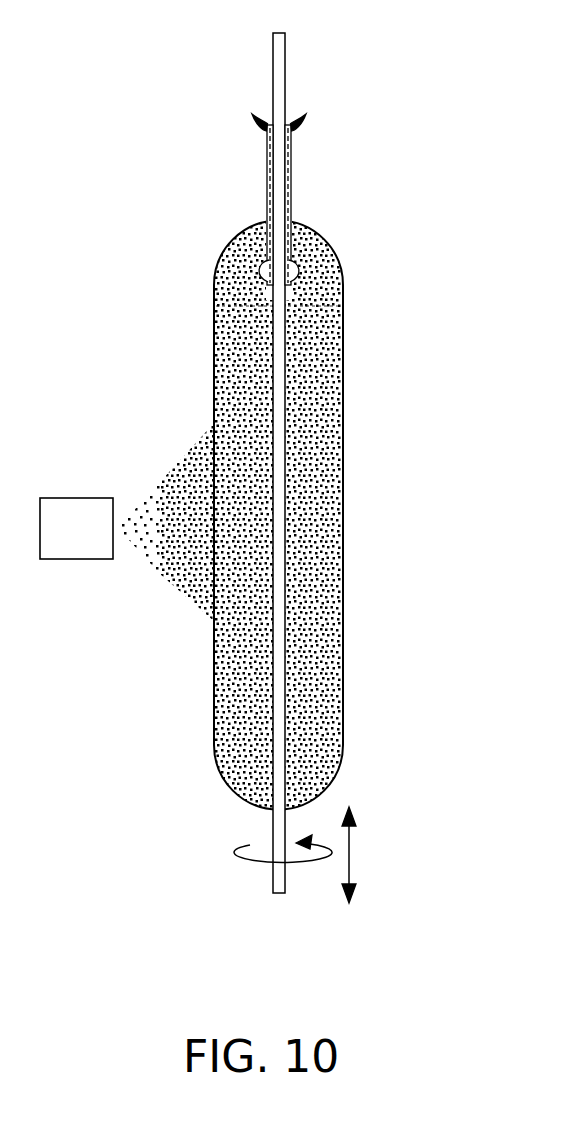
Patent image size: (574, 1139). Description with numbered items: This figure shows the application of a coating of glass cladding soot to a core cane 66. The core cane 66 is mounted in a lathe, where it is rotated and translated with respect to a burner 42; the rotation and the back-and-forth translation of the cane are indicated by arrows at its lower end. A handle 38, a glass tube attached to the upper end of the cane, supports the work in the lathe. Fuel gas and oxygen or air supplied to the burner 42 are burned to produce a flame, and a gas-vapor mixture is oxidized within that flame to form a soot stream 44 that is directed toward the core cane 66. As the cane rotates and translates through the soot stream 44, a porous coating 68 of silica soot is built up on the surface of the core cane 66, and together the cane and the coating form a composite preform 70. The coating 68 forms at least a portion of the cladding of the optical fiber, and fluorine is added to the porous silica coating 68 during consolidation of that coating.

The handle 38 is at (268, 185).
The burner 42 is at (78, 498).
The soot stream 44 is at (178, 578).
The core cane 66 is at (272, 78).
The porous coating 68 is at (337, 378).
The composite preform 70 is at (239, 457).